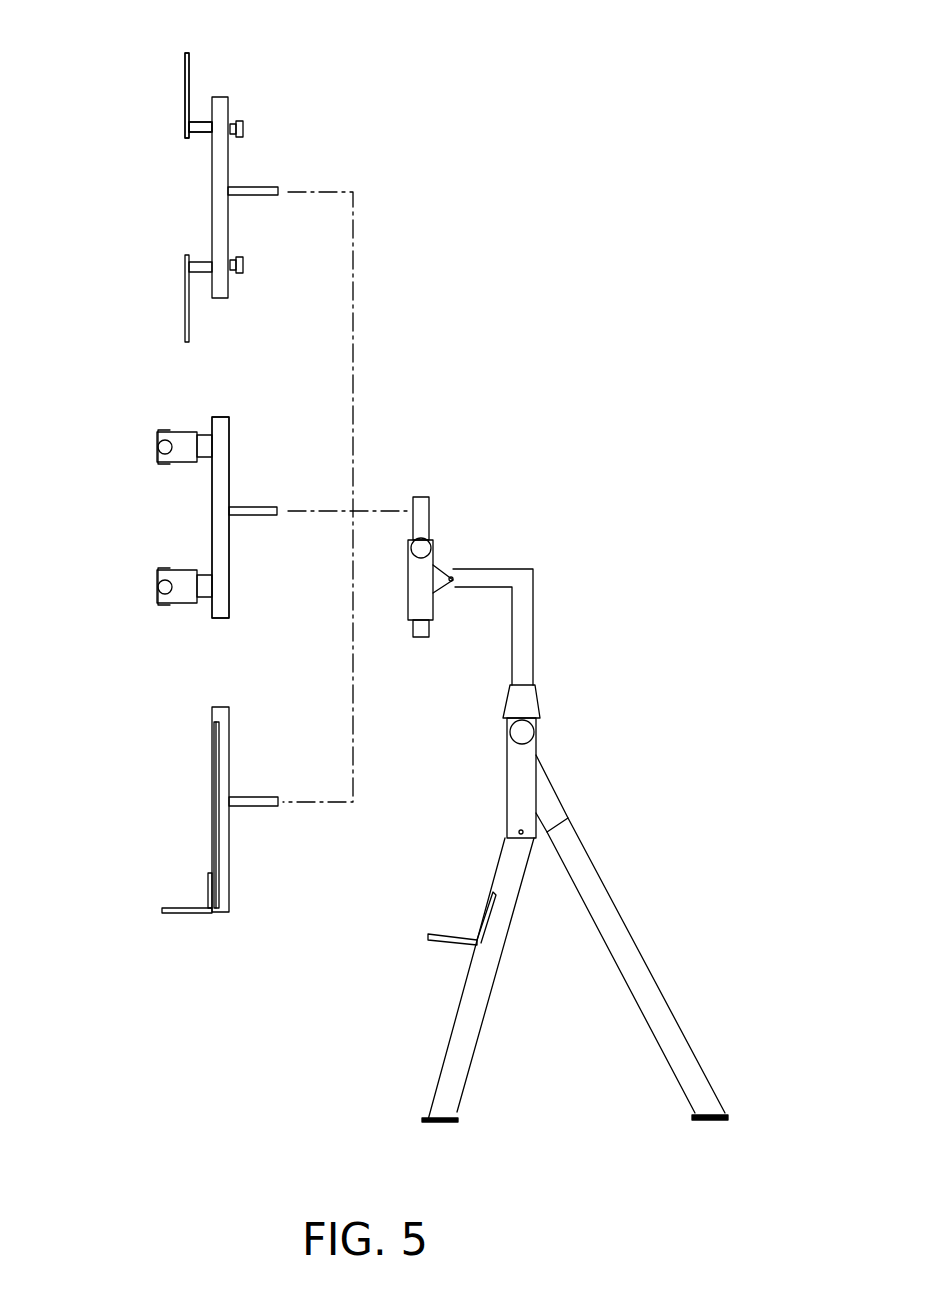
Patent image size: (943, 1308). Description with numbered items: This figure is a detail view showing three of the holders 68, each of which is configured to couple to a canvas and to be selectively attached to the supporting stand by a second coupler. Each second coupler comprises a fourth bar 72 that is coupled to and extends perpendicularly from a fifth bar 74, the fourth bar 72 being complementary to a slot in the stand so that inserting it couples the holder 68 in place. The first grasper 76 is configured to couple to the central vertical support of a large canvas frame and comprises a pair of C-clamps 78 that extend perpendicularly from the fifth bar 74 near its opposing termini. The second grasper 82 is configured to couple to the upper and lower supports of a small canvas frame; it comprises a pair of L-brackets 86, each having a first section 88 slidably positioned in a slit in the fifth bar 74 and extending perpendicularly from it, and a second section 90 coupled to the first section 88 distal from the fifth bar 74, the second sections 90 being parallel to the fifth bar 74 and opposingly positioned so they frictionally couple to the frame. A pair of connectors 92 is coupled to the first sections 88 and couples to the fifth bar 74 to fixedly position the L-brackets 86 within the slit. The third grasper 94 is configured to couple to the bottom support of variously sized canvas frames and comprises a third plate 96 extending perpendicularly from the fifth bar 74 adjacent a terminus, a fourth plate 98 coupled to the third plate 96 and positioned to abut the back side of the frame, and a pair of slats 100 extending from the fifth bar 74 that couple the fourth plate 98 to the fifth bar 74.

The holder 68 is at (287, 754).
The fourth bar 72 is at (247, 508).
The fifth bar 74 is at (230, 452).
The first grasper 76 is at (242, 555).
The C-clamps 78 is at (182, 462).
The second grasper 82 is at (259, 165).
The L-brackets 86 is at (183, 128).
The first section 88 is at (200, 117).
The second section 90 is at (185, 70).
The connectors 92 is at (243, 125).
The third grasper 94 is at (254, 857).
The third plate 96 is at (173, 907).
The fourth plate 98 is at (210, 890).
The slats 100 is at (212, 792).